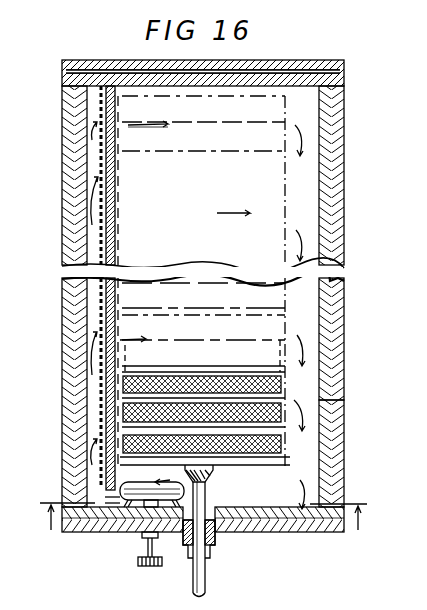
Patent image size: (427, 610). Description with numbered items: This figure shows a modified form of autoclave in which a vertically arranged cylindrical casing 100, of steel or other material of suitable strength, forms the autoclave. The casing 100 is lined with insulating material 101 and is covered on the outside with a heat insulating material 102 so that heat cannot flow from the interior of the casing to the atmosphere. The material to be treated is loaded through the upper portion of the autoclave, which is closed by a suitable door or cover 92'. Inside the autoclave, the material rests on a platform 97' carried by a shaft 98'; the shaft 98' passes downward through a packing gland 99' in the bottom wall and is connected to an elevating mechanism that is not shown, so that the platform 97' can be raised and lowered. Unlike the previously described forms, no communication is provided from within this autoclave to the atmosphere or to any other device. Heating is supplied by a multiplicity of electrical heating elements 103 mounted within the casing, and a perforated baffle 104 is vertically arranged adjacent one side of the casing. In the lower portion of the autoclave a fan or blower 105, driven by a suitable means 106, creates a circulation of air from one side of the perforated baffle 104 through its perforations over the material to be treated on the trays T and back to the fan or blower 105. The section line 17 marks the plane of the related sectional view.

The door or cover 92' is at (228, 64).
The cylindrical casing 100 is at (335, 232).
The insulating material 101 is at (330, 372).
The heat insulating material 102 is at (343, 428).
The electrical heating elements 103 is at (100, 150).
The perforated baffle 104 is at (100, 312).
The fan or blower 105 is at (138, 492).
The driving means 106 is at (148, 566).
The platform 97' is at (228, 481).
The shaft 98' is at (224, 539).
The packing gland 99' is at (224, 539).
The trays T is at (283, 412).
The section line 17- 17 is at (202, 531).